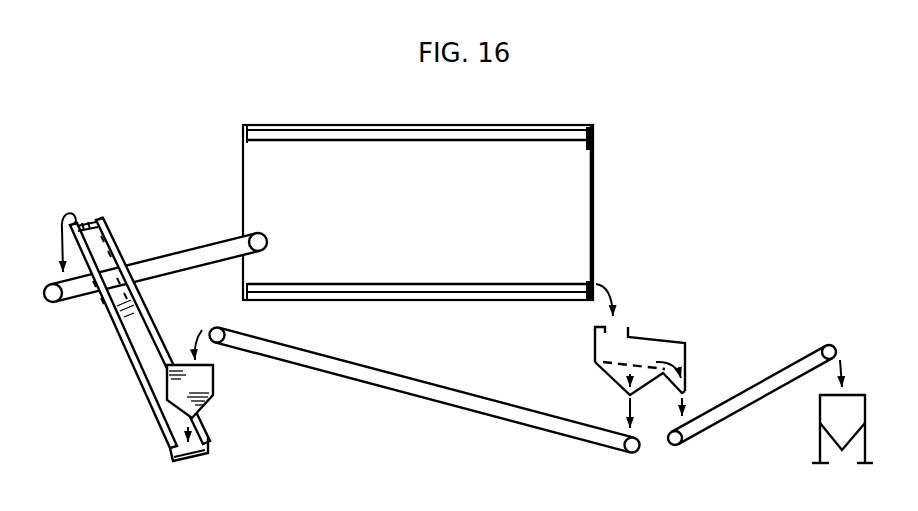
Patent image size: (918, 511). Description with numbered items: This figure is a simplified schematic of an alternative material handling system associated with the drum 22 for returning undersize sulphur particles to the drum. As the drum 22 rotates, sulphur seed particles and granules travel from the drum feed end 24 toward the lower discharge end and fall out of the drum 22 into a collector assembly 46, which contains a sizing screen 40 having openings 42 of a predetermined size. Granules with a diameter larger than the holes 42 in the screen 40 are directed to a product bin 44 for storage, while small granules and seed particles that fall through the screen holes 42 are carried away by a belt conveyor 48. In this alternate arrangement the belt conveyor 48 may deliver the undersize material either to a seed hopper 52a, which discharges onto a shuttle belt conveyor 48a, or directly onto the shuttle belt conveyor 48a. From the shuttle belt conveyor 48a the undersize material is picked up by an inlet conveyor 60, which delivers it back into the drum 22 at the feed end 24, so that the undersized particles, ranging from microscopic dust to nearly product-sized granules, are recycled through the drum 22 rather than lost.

The drum 22 is at (549, 121).
The drum feed end 24 is at (269, 276).
The sizing screen 40 is at (649, 356).
The screen openings 42 is at (609, 358).
The product bin 44 is at (841, 421).
The collector assembly 46 is at (592, 345).
The belt conveyor 48 is at (468, 391).
The shuttle belt conveyor 48a is at (137, 339).
The seed hopper 52a is at (194, 383).
The inlet conveyor 60 is at (170, 246).